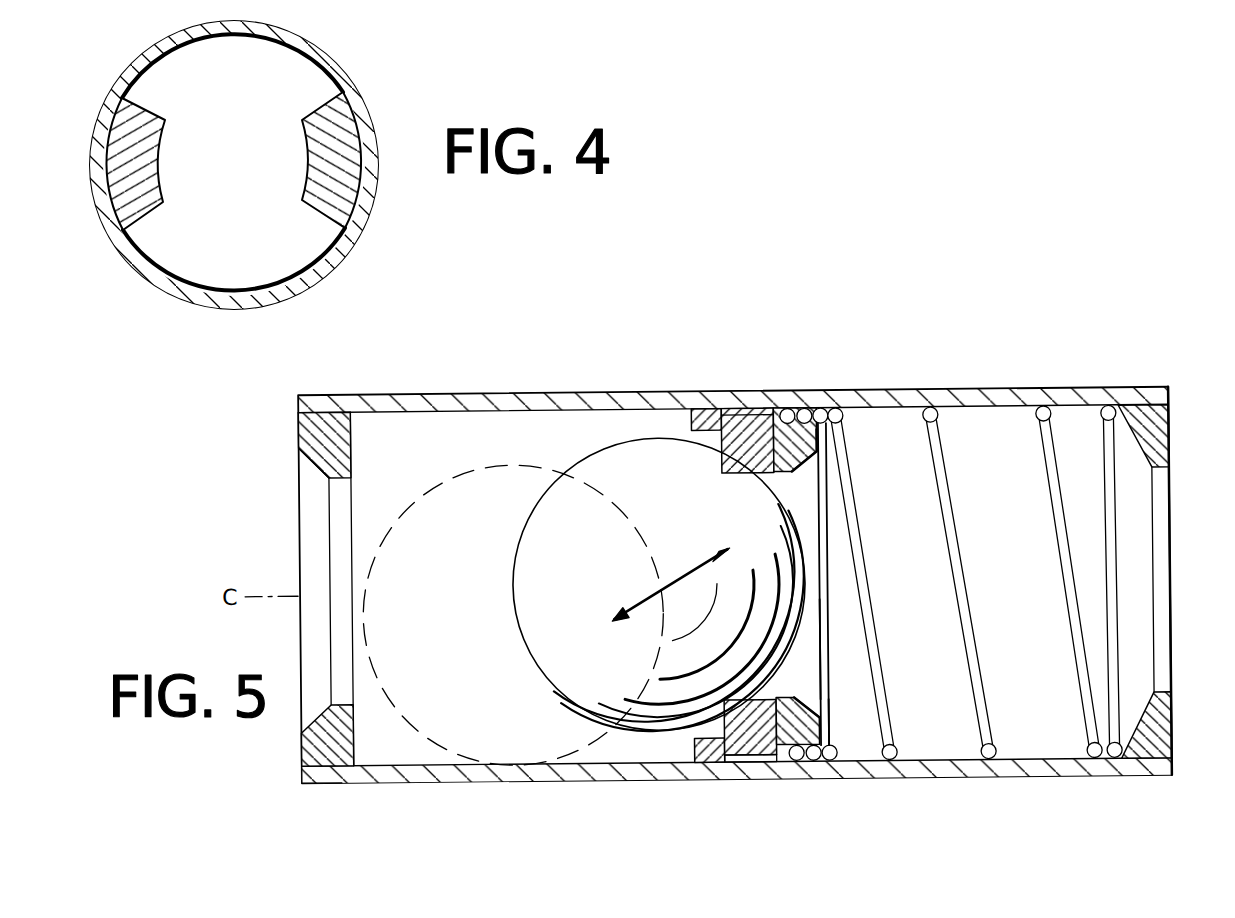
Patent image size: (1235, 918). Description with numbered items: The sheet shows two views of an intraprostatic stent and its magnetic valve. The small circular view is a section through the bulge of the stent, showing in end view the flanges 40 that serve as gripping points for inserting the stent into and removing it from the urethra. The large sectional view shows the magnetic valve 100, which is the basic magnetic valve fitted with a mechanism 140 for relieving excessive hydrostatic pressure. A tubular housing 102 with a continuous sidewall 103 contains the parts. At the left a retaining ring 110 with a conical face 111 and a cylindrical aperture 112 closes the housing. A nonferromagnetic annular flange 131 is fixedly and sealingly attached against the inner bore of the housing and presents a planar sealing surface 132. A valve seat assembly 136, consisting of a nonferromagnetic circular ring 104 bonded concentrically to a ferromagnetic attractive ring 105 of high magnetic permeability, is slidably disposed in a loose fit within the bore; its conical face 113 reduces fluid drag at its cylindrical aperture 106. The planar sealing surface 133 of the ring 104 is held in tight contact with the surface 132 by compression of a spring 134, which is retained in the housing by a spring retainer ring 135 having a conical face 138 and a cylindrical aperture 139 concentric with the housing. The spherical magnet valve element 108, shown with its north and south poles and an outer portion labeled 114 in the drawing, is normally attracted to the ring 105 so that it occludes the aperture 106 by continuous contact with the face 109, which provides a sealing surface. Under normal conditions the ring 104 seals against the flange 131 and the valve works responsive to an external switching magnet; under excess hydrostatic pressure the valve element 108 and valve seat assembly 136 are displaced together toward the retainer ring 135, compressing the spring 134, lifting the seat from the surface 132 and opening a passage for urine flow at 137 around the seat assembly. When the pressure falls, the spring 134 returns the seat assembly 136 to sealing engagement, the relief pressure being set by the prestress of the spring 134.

In FIG. 4, the flanges 40 is at (304, 165).
In FIG. 5, the magnetic valve 100 is at (548, 376).
In FIG. 5, the tubular housing 102 is at (385, 391).
In FIG. 5, the continuous sidewall 103 is at (482, 391).
In FIG. 5, the circular ring 104 is at (746, 410).
In FIG. 5, the ferromagnetic attractive ring 105 is at (845, 418).
In FIG. 5, the cylindrical aperture 106 is at (820, 668).
In FIG. 5, the spherical magnet valve element 108 is at (594, 440).
In FIG. 5, the face 109 is at (745, 457).
In FIG. 5, the retaining ring 110 is at (300, 432).
In FIG. 5, the conical face 111 is at (305, 476).
In FIG. 5, the cylindrical aperture 112 is at (340, 514).
In FIG. 5, the conical face 113 is at (825, 722).
In FIG. 5, the ball surface layer 114 is at (580, 668).
In FIG. 5, the annular flange 131 is at (698, 409).
In FIG. 5, the planar sealing surface 132 is at (723, 408).
In FIG. 5, the planar sealing surface 133 is at (720, 736).
In FIG. 5, the spring 134 is at (957, 518).
In FIG. 5, the spring retainer ring 135 is at (1146, 434).
In FIG. 5, the valve seat assembly 136 is at (806, 445).
In FIG. 5, the passage for urine flow 137 is at (750, 765).
In FIG. 5, the conical face 138 is at (1176, 735).
In FIG. 5, the cylindrical aperture 139 is at (1158, 572).
In FIG. 5, the mechanism for relieving excessive hydrostatic pressure 140 is at (1198, 330).